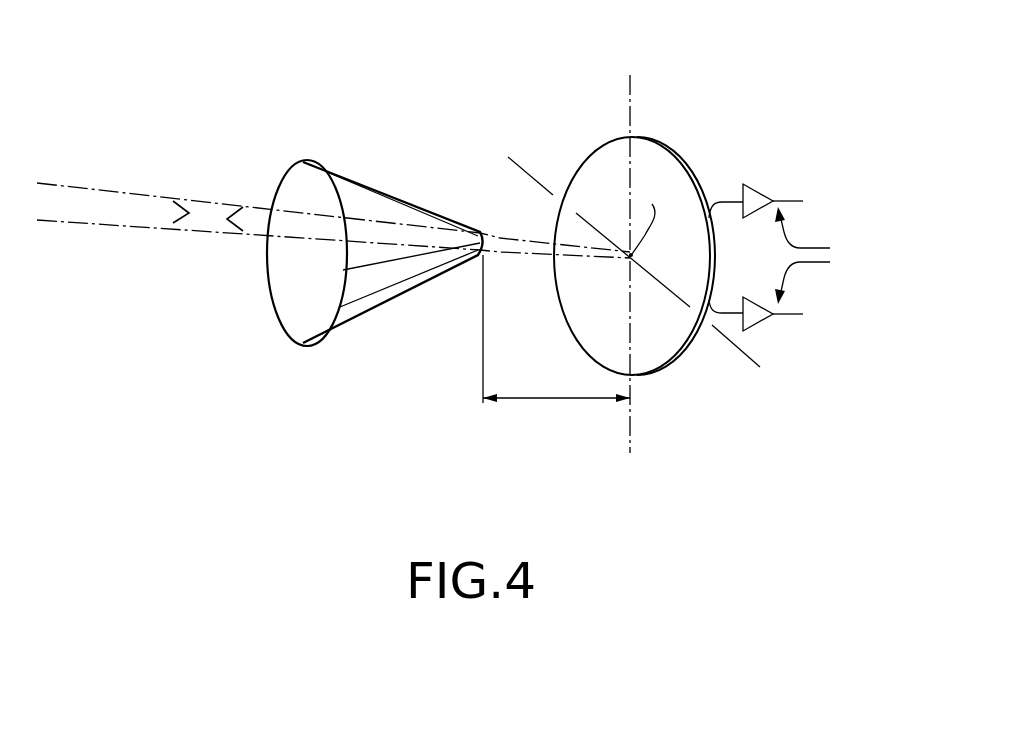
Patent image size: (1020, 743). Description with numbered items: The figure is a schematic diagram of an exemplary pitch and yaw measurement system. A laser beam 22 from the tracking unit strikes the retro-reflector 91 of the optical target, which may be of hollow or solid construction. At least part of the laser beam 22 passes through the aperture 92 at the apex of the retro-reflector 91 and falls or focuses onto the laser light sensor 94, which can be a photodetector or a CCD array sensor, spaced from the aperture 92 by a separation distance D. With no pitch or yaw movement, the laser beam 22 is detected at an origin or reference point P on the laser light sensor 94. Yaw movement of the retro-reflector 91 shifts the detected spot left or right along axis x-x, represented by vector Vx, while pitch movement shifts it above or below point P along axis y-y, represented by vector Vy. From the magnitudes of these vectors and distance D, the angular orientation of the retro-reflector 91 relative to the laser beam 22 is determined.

The laser beam 22 is at (134, 180).
The retro-reflector 91 is at (370, 194).
The aperture 92 is at (490, 222).
The laser light sensor 94 is at (677, 357).